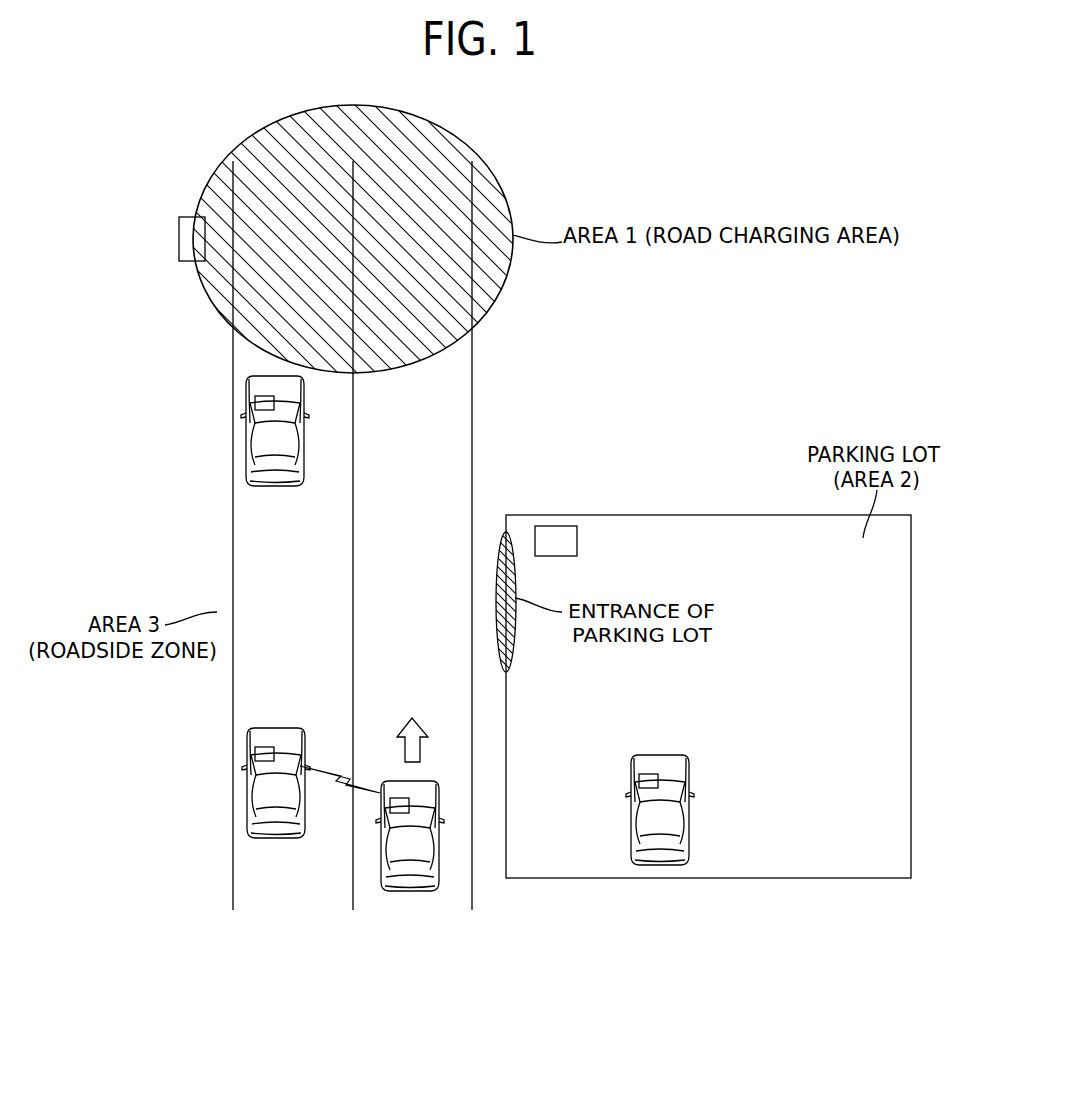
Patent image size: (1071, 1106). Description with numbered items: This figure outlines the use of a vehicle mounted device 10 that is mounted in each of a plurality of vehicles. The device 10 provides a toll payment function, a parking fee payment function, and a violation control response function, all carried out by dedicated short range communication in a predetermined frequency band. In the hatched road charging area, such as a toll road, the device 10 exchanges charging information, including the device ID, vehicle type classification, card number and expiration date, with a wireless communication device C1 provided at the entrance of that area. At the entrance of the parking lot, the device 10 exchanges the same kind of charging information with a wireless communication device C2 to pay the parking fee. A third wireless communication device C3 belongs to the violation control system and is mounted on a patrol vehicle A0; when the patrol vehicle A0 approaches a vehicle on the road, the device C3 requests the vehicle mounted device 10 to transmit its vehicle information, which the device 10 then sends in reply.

The vehicle mounted device 10 is at (255, 401).
The wireless communication device C1 is at (179, 229).
The wireless communication device C2 is at (554, 526).
The wireless communication device C3 is at (397, 797).
The patrol vehicle A0 is at (405, 853).